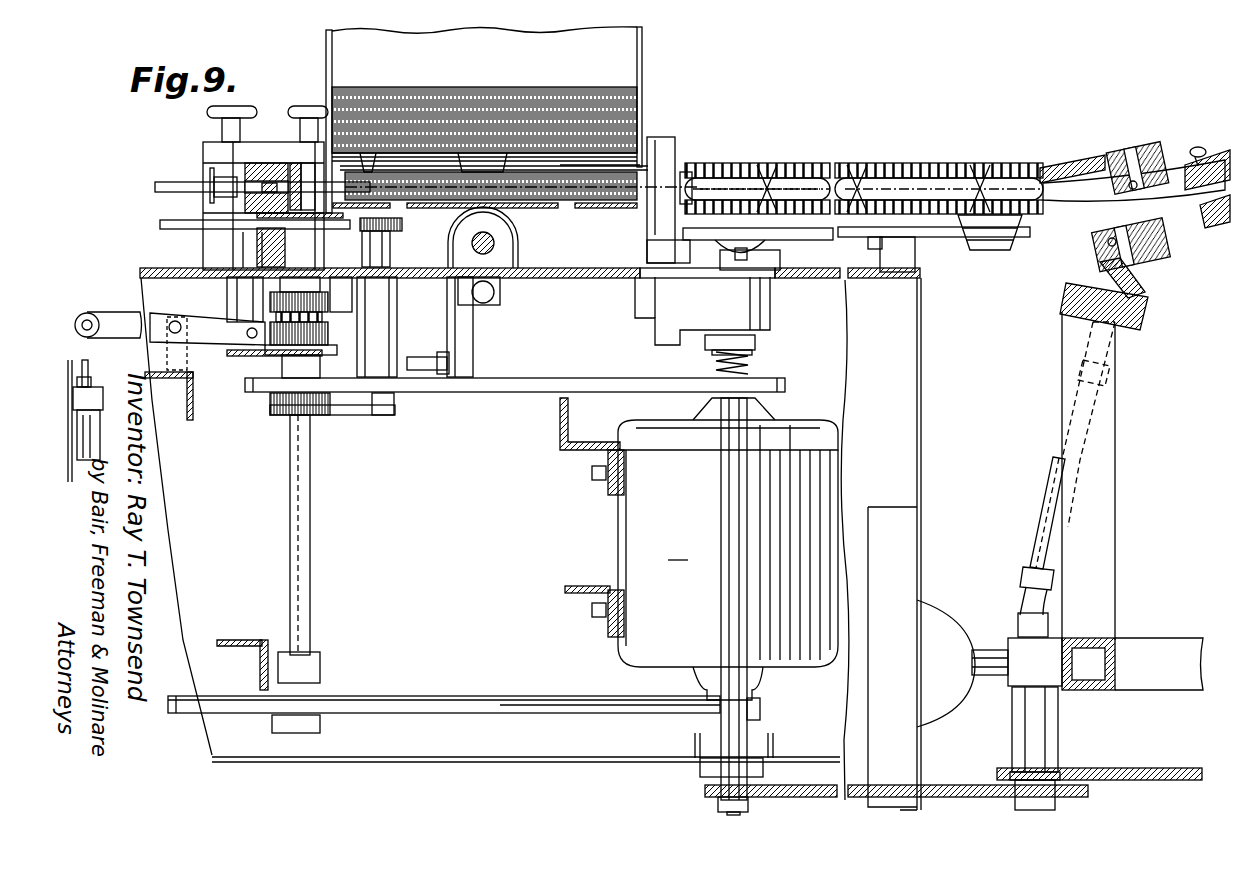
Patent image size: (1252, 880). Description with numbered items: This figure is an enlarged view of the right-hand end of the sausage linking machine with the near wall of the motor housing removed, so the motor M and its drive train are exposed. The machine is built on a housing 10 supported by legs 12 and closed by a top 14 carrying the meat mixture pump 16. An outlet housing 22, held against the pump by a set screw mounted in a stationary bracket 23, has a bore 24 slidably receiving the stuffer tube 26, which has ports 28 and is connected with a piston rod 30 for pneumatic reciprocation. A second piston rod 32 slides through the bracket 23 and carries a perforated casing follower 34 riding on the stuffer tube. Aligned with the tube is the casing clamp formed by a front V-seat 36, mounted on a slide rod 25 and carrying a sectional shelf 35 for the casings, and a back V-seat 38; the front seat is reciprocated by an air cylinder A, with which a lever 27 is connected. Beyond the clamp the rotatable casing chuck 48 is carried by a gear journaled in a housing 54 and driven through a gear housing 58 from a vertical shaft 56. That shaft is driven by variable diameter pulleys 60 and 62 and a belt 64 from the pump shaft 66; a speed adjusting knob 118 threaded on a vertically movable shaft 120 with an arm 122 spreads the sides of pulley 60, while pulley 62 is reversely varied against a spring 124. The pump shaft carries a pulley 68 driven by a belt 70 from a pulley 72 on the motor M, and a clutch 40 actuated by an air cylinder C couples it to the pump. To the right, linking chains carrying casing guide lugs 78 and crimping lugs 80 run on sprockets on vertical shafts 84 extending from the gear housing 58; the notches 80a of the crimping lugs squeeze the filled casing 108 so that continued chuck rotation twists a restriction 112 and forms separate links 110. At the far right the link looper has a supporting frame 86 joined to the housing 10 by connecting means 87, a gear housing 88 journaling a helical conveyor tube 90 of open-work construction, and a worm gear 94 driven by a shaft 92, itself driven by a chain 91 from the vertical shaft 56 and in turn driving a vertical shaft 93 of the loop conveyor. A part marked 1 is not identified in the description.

The lever arm 1 is at (1132, 169).
The housing 10 is at (922, 340).
The legs 12 is at (905, 540).
The top 14 is at (566, 272).
The meat mixture pump 16 is at (210, 140).
The outlet housing 22 is at (260, 195).
The stationary bracket 23 is at (258, 252).
The bore 24 is at (270, 165).
The slide rod 25 is at (476, 252).
The stuffer tube 26 is at (330, 188).
The lever 27 is at (475, 338).
The ports 28 is at (297, 165).
The piston rod 30 is at (186, 186).
The piston rod 32 is at (190, 232).
The casing follower 34 is at (355, 178).
The sectional shelf 35 is at (437, 207).
The front V-seat 36 is at (498, 214).
The back V-seat 38 is at (598, 165).
The clutch 40 is at (320, 340).
The casing chuck 48 is at (715, 165).
The housing 54 is at (640, 245).
The vertical shaft 56 is at (722, 498).
The gear housing 58 is at (772, 310).
The variable diameter pulley 60 is at (272, 402).
The variable diameter pulley 62 is at (711, 372).
The belt 64 is at (477, 392).
The pump shaft 66 is at (310, 490).
The pulley 68 is at (362, 696).
The belt 70 is at (478, 696).
The pulley 72 is at (698, 718).
The casing guide lugs 78 is at (945, 165).
The crimping lugs 80 is at (865, 172).
The notches 80a is at (982, 170).
The vertical shafts 84 is at (735, 252).
The supporting frame 86 is at (1148, 655).
The connecting means 87 is at (965, 612).
The gear housing 88 is at (1150, 150).
The helical conveyor tube 90 is at (1228, 150).
The chain 91 is at (930, 786).
The shaft 92 is at (1048, 512).
The vertical shaft 93 is at (1120, 768).
The worm gear 94 is at (1165, 245).
The casing 108 is at (446, 85).
The links 110 is at (812, 172).
The restriction 112 is at (862, 170).
The speed adjusting knob 118 is at (403, 232).
The vertically movable shaft 120 is at (396, 402).
The arm 122 is at (348, 415).
The spring 124 is at (752, 366).
The air cylinder A is at (500, 290).
The air cylinder C is at (96, 390).
The motor M is at (728, 560).